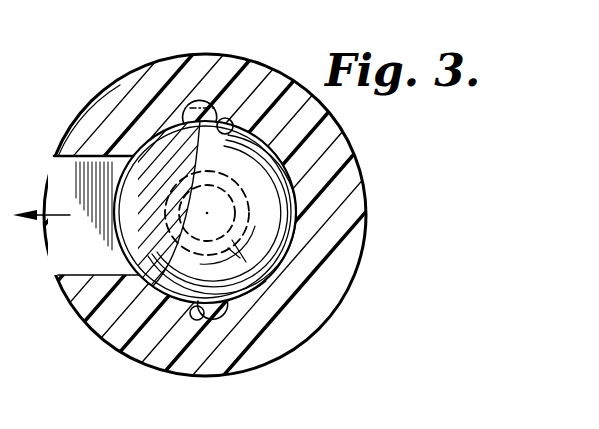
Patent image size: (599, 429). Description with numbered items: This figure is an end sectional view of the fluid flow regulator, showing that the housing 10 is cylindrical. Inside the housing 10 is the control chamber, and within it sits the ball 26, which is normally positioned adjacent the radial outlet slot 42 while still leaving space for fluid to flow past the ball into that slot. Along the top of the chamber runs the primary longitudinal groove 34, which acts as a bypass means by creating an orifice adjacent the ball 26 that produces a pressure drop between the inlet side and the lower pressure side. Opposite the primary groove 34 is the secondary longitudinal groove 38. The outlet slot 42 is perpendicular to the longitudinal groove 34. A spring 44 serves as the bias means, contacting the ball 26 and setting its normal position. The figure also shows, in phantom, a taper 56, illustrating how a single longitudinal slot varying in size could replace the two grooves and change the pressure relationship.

The housing 10 is at (365, 290).
The ball 26 is at (265, 211).
The primary longitudinal groove 34 is at (228, 122).
The secondary longitudinal groove 38 is at (203, 317).
The radial outlet slot 42 is at (80, 236).
The spring 44 is at (266, 299).
The taper 56 is at (176, 112).